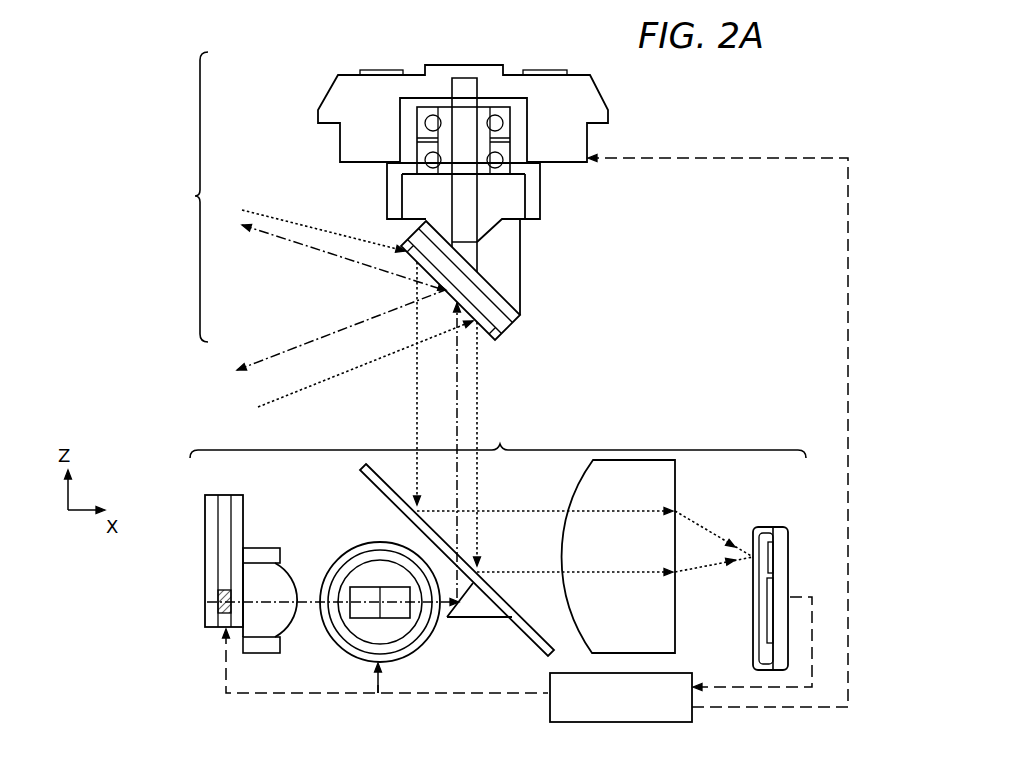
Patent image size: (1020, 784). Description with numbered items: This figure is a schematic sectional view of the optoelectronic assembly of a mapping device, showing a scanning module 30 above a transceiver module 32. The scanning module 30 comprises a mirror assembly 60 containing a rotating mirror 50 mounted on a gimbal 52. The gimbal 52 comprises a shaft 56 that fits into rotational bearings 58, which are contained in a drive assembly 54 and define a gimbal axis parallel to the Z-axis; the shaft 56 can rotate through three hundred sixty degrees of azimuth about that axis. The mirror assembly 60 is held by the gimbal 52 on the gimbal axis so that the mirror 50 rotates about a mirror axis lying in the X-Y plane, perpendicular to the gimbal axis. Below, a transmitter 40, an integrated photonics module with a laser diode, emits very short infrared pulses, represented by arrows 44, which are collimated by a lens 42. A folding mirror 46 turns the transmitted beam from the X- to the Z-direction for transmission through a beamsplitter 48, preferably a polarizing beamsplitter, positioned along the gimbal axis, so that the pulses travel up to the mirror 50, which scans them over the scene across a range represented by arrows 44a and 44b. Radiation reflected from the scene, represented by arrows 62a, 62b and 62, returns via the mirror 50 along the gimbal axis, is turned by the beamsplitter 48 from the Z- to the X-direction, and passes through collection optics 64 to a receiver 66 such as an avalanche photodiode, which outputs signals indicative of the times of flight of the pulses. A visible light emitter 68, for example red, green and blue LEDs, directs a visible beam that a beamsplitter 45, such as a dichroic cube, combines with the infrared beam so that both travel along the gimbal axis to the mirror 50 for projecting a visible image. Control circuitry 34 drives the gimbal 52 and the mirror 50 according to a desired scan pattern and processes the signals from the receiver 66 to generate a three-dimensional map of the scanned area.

The scanning module 30 is at (186, 197).
The transceiver module 32 is at (498, 439).
The control circuitry 34 is at (686, 673).
The transmitter 40 is at (206, 600).
The lens 42 is at (260, 547).
The arrows 44 is at (455, 376).
The arrows 44a is at (262, 234).
The arrows 44b is at (253, 364).
The beamsplitter 45 is at (358, 586).
The folding mirror 46 is at (478, 618).
The beamsplitter 48 is at (361, 469).
The rotating mirror 50 is at (444, 274).
The gimbal 52 is at (522, 248).
The drive assembly 54 is at (598, 89).
The shaft 56 is at (462, 142).
The rotational bearings 58 is at (501, 115).
The mirror assembly 60 is at (409, 236).
The arrows 62 is at (482, 378).
The arrows 62a is at (264, 207).
The arrows 62b is at (292, 394).
The collection optics 64 is at (655, 459).
The receiver 66 is at (760, 527).
The visible light emitter 68 is at (327, 569).